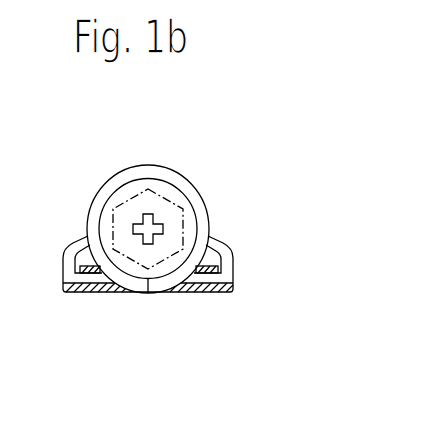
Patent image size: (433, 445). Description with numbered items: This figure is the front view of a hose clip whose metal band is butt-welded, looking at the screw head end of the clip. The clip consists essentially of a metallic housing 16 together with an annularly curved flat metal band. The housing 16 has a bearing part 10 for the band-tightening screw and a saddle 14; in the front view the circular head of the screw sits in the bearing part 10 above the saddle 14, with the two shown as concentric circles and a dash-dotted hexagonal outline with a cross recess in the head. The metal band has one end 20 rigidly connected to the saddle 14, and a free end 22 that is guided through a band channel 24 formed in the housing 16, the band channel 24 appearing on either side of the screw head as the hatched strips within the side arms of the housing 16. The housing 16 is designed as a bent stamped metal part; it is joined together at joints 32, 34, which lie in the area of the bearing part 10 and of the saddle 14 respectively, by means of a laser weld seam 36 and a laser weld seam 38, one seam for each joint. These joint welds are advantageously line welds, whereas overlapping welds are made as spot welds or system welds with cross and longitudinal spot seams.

The bearing part 10 is at (178, 185).
The saddle 14 is at (228, 290).
The housing 16 is at (101, 186).
The end of metal band 20 is at (88, 291).
The free end of metal band 22 is at (85, 265).
The band channel 24 is at (214, 262).
The joint 32 is at (121, 334).
The joint 34 is at (146, 296).
The laser weld seam 36 is at (158, 293).
The laser weld seam 38 is at (148, 293).